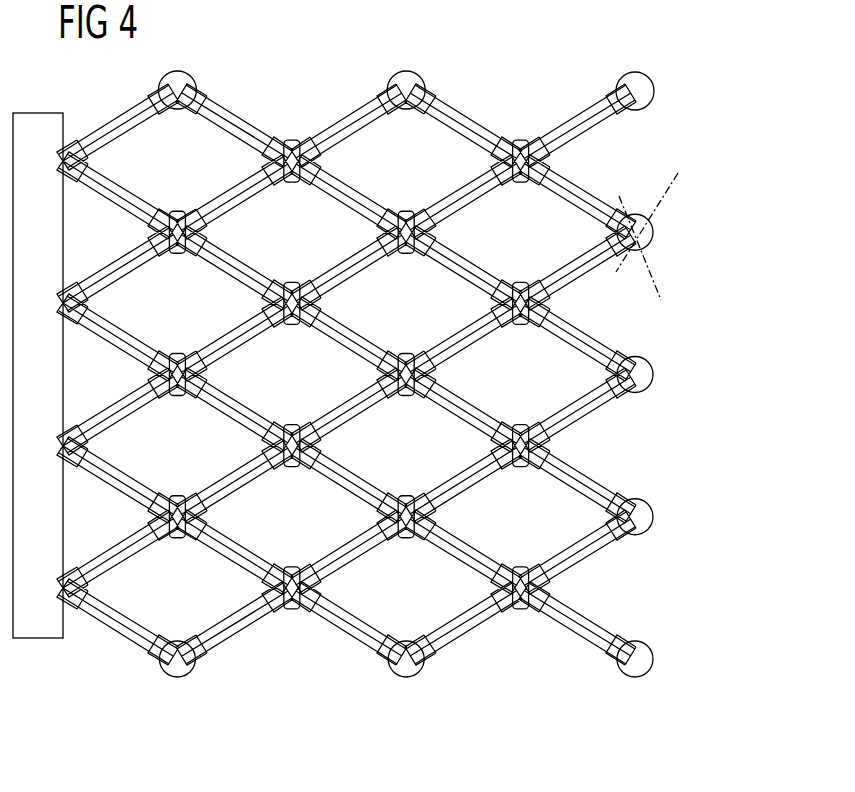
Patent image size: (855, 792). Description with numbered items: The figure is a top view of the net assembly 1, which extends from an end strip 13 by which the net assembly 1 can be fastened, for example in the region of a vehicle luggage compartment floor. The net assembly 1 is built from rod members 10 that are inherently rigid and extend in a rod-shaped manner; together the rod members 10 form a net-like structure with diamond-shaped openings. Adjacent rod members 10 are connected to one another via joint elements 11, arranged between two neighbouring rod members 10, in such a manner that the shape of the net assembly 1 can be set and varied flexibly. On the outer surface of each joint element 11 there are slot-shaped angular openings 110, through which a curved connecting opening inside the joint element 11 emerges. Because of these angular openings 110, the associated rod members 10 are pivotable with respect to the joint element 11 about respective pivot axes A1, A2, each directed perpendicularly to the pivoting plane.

The net assembly 1 is at (522, 86).
The rod member 10 is at (333, 125).
The joint element 11 is at (405, 71).
The angular opening 110 is at (649, 105).
The end strip 13 is at (37, 623).
The pivot axis A1 is at (655, 217).
The pivot axis A2 is at (648, 260).